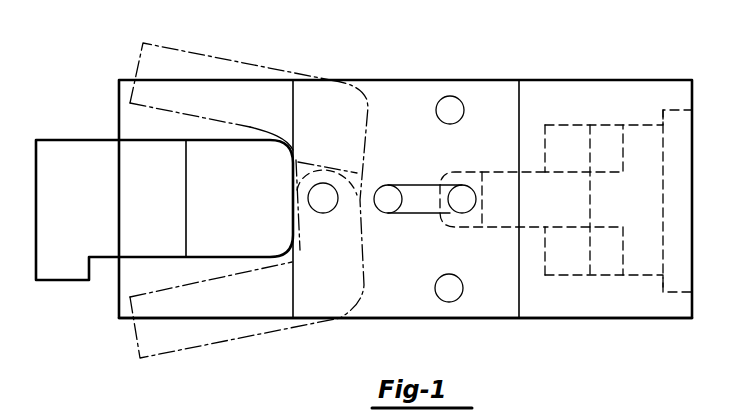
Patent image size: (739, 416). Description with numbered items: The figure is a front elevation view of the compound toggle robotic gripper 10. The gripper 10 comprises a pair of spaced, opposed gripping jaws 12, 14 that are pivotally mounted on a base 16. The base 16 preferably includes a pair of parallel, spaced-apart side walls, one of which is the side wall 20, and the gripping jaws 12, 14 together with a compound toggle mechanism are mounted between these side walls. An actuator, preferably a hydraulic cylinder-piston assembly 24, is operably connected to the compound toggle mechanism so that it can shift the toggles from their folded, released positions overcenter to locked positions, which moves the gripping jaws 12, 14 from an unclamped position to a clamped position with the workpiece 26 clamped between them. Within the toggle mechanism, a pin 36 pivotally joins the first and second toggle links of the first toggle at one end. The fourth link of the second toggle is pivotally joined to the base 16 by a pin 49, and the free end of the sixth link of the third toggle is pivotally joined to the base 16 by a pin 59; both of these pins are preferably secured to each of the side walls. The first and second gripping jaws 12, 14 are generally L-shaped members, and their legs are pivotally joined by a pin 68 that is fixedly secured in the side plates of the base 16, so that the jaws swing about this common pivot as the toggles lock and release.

The compound toggle robotic gripper 10 is at (440, 55).
The first gripping jaw 12 is at (207, 96).
The second gripping jaw 14 is at (218, 308).
The base 16 is at (385, 80).
The side wall 20 is at (397, 305).
The hydraulic cylinder-piston assembly 24 is at (566, 135).
The workpiece 26 is at (62, 150).
The pin 36 is at (388, 214).
The pin 49 is at (457, 112).
The pin 59 is at (453, 292).
The pin 68 is at (312, 197).